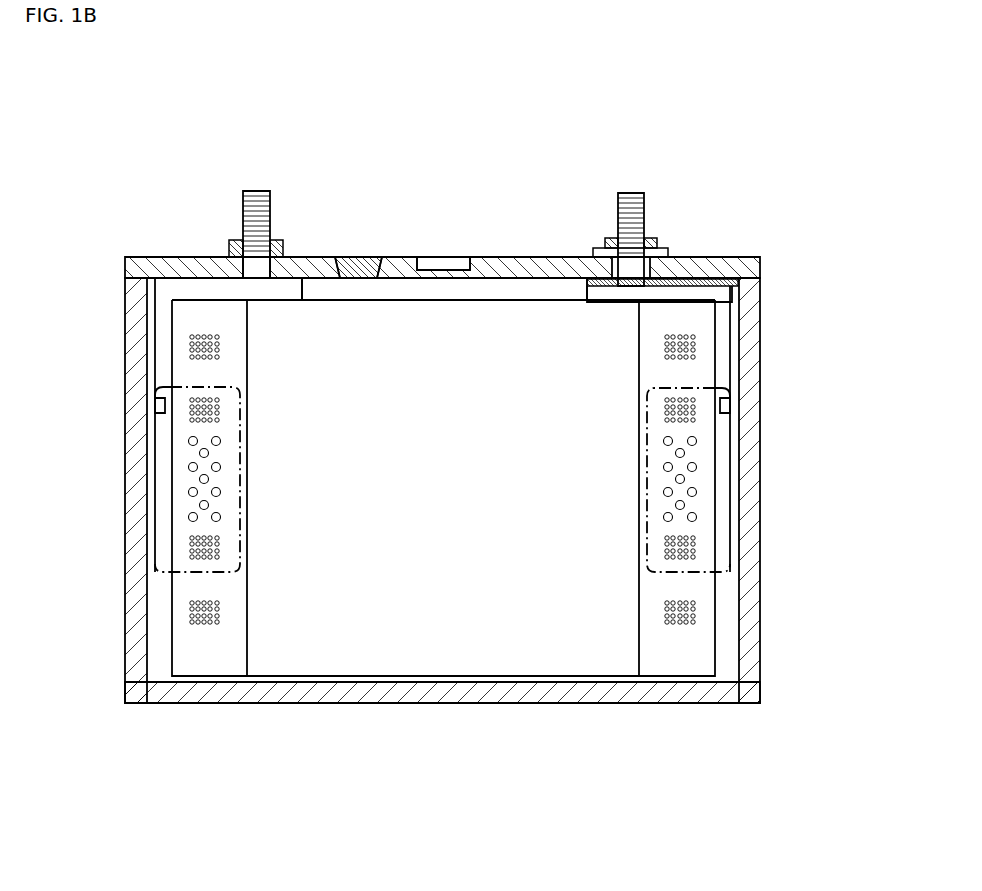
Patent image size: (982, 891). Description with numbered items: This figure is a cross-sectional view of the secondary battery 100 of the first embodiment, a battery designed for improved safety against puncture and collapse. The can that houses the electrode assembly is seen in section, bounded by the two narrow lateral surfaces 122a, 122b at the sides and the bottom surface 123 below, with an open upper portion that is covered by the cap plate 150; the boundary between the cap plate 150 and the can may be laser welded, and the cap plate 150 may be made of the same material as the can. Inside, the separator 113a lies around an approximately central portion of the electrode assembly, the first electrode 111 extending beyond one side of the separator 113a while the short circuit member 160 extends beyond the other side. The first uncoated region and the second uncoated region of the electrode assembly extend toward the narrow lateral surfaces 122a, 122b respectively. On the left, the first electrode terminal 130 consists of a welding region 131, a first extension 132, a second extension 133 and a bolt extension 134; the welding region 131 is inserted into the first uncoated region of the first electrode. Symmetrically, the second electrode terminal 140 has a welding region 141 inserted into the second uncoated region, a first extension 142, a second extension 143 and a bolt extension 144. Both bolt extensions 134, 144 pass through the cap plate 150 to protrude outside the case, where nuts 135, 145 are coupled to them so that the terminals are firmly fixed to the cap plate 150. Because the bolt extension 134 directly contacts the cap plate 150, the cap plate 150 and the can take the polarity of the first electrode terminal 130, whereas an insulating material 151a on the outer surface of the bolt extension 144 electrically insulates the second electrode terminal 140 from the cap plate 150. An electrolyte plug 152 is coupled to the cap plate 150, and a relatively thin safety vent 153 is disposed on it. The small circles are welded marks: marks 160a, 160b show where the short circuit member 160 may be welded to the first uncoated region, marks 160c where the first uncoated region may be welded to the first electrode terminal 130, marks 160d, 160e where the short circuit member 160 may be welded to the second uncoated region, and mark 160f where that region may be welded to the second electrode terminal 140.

The secondary battery 100 is at (757, 113).
The first electrode 111 is at (209, 665).
The separator 113a is at (420, 670).
The narrow lateral surface 122a is at (752, 304).
The narrow lateral surface 122b is at (152, 296).
The bottom surface 123 is at (727, 698).
The first electrode terminal 130 is at (238, 190).
The welding region 131 is at (163, 535).
The first extension 132 is at (163, 313).
The second extension 133 is at (190, 292).
The bolt extension 134 is at (257, 190).
The nut 135 is at (278, 239).
The second electrode terminal 140 is at (652, 190).
The welding region 141 is at (722, 550).
The first extension 142 is at (722, 337).
The second extension 143 is at (700, 287).
The bolt extension 144 is at (630, 192).
The nut 145 is at (612, 240).
The cap plate 150 is at (755, 268).
The insulating material 151a is at (663, 250).
The electrolyte plug 152 is at (356, 262).
The safety vent 153 is at (442, 258).
The short circuit member 160 is at (680, 665).
The welded mark 160a is at (200, 350).
The welded mark 160b is at (200, 612).
The welded mark 160c is at (192, 545).
The welded mark 160d is at (700, 353).
The welded mark 160e is at (695, 612).
The welded mark 160f is at (693, 545).